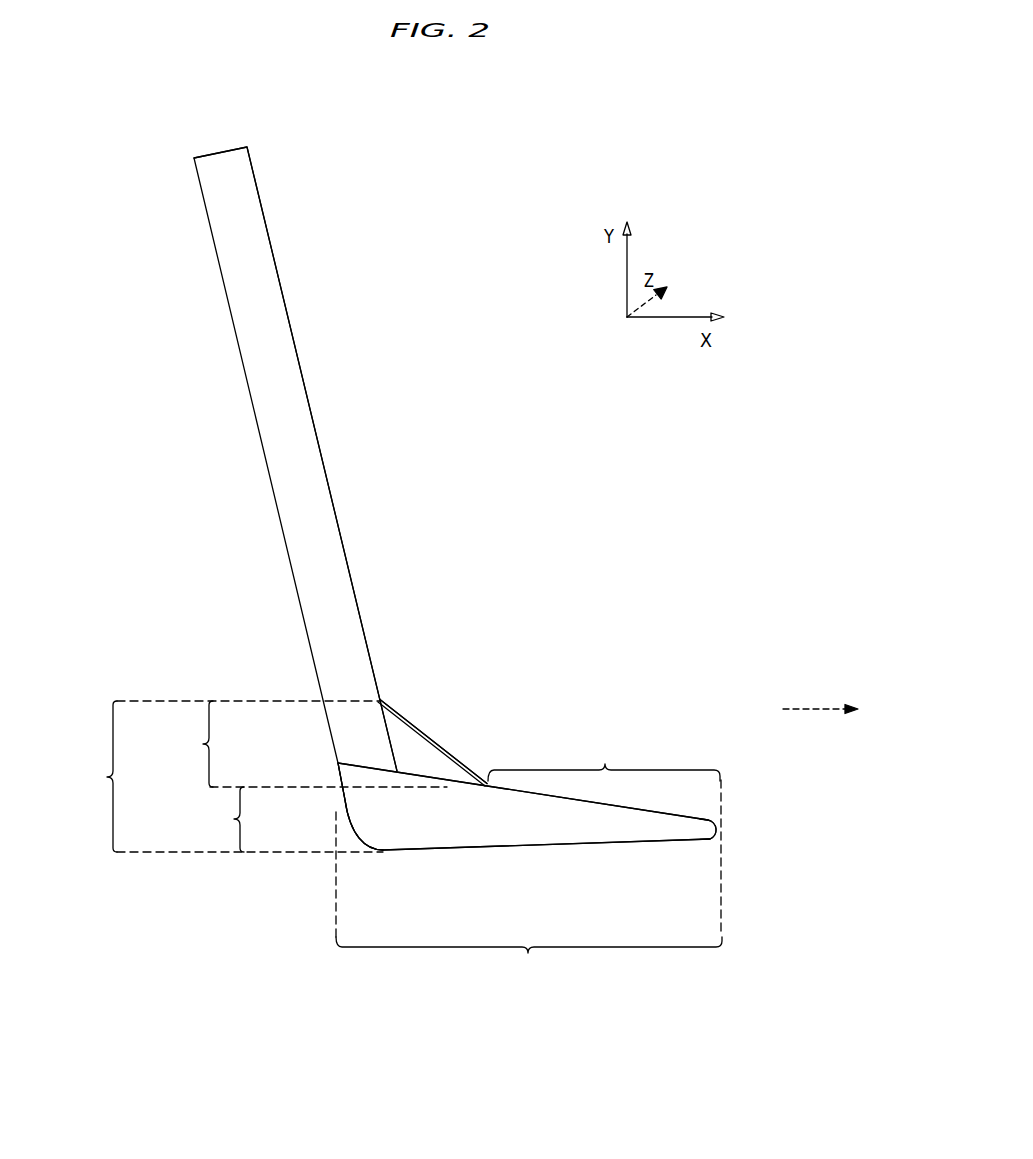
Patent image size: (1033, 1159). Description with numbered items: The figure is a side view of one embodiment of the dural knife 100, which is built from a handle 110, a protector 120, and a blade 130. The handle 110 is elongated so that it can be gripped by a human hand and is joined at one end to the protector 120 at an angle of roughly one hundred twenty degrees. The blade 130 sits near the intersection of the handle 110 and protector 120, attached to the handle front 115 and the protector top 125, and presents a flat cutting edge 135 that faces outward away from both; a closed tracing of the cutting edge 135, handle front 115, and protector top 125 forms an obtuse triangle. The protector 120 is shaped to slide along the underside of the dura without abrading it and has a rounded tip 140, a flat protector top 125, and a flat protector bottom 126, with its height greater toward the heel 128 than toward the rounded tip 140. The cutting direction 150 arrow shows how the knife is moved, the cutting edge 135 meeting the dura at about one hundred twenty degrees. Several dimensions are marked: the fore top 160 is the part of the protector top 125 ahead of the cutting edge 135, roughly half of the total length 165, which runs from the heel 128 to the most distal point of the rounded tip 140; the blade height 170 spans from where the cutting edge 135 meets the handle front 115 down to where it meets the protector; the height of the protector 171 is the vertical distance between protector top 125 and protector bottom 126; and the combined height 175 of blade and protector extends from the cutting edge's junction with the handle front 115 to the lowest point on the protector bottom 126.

The dural knife 100 is at (455, 178).
The handle 110 is at (285, 364).
The handle front 115 is at (323, 458).
The protector 120 is at (500, 821).
The protector top 125 is at (655, 807).
The protector bottom 126 is at (593, 857).
The heel of protector 128 is at (348, 830).
The blade 130 is at (417, 742).
The cutting edge 135 is at (402, 719).
The rounded tip 140 is at (726, 815).
The cutting direction 150 is at (790, 733).
The fore top 160 is at (604, 748).
The total length 165 is at (529, 891).
The blade height 170 is at (282, 751).
The height of the protector 171 is at (250, 819).
The combined height 175 is at (67, 776).